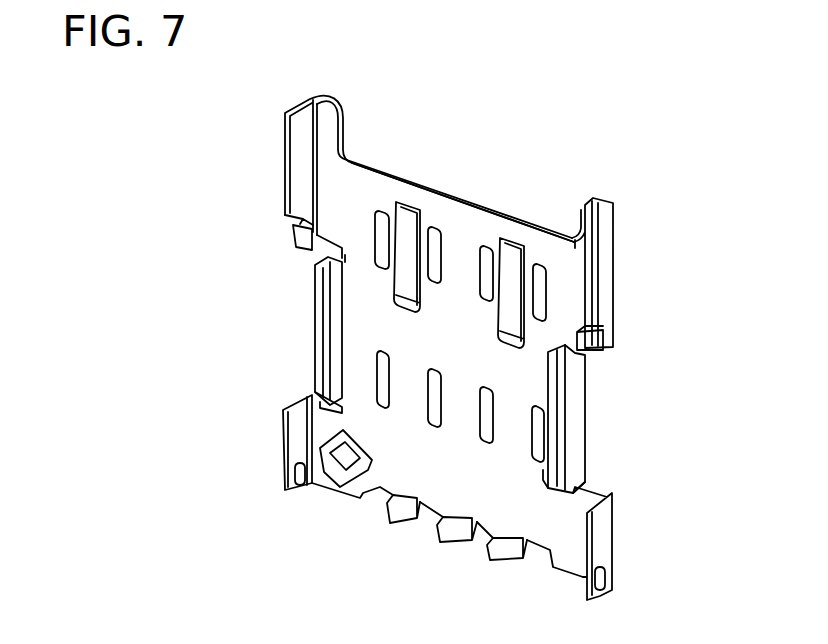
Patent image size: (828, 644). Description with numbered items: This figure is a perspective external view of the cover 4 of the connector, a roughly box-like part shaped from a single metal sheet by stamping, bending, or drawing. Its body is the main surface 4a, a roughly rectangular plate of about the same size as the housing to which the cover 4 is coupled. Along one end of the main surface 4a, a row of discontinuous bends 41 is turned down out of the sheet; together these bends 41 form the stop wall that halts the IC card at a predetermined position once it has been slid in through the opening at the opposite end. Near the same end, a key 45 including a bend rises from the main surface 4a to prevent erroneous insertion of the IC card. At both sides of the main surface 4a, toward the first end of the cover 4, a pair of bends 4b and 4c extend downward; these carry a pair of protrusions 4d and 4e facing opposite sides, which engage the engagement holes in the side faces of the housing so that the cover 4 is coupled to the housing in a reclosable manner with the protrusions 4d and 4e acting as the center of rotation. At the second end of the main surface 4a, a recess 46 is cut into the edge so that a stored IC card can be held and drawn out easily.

The cover 4 is at (216, 253).
The recess 46 is at (402, 160).
The main surface 4a is at (457, 242).
The bend 4b is at (283, 442).
The bend 4c is at (600, 527).
The protrusion 4d is at (302, 490).
The protrusion 4e is at (603, 578).
The key 45 is at (332, 480).
The bends 41 is at (490, 560).